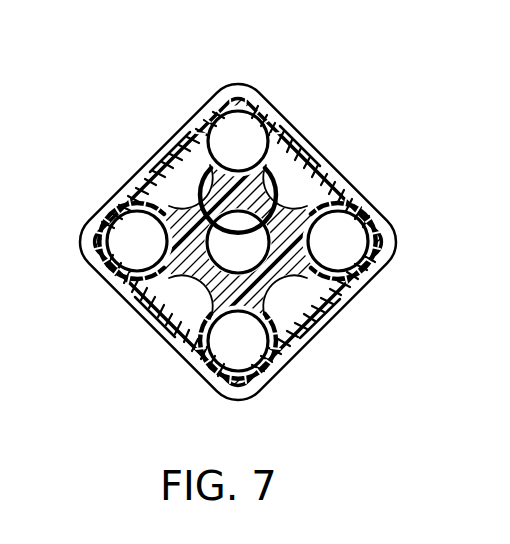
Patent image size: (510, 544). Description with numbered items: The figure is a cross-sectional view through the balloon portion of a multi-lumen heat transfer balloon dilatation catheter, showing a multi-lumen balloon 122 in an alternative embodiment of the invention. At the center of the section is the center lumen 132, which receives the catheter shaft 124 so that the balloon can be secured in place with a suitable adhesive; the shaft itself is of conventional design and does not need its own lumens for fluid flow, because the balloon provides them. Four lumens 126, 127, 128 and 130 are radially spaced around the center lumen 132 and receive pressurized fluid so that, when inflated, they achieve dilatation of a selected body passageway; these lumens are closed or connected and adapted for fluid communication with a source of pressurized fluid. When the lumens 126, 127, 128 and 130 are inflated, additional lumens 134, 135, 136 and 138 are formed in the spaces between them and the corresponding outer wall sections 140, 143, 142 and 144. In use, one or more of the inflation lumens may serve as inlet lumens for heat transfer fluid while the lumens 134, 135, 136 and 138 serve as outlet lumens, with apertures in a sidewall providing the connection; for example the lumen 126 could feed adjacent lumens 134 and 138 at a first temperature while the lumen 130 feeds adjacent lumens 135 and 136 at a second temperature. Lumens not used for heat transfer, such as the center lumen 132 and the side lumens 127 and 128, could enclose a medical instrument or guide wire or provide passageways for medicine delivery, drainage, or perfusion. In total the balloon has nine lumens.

The multi-lumen balloon 122 is at (291, 92).
The catheter shaft 124 is at (253, 252).
The lumen 126 is at (242, 130).
The lumen 127 is at (96, 222).
The lumen 128 is at (380, 214).
The lumen 130 is at (237, 350).
The center lumen 132 is at (277, 208).
The lumen 134 is at (173, 175).
The lumen 135 is at (177, 293).
The lumen 136 is at (300, 297).
The lumen 138 is at (303, 172).
The wall section 140 is at (167, 140).
The wall section 142 is at (318, 346).
The wall section 143 is at (152, 343).
The wall section 144 is at (300, 130).